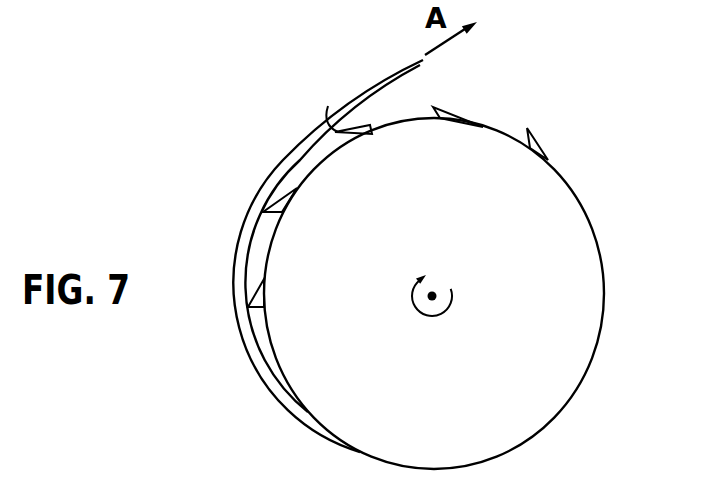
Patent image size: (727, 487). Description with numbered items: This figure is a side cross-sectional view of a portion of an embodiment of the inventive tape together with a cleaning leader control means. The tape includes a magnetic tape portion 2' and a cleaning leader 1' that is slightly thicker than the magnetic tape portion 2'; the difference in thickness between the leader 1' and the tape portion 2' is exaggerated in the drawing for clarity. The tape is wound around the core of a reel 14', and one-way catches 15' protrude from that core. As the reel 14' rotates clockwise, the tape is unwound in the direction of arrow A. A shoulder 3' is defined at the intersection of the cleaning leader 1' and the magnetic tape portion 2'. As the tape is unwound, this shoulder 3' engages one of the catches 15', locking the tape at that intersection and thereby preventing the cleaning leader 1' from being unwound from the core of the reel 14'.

The cleaning leader 1' is at (328, 256).
The magnetic tape portion 2' is at (332, 219).
The shoulder 3' is at (320, 90).
The reel 14' is at (468, 293).
The one-way catches 15' is at (430, 191).